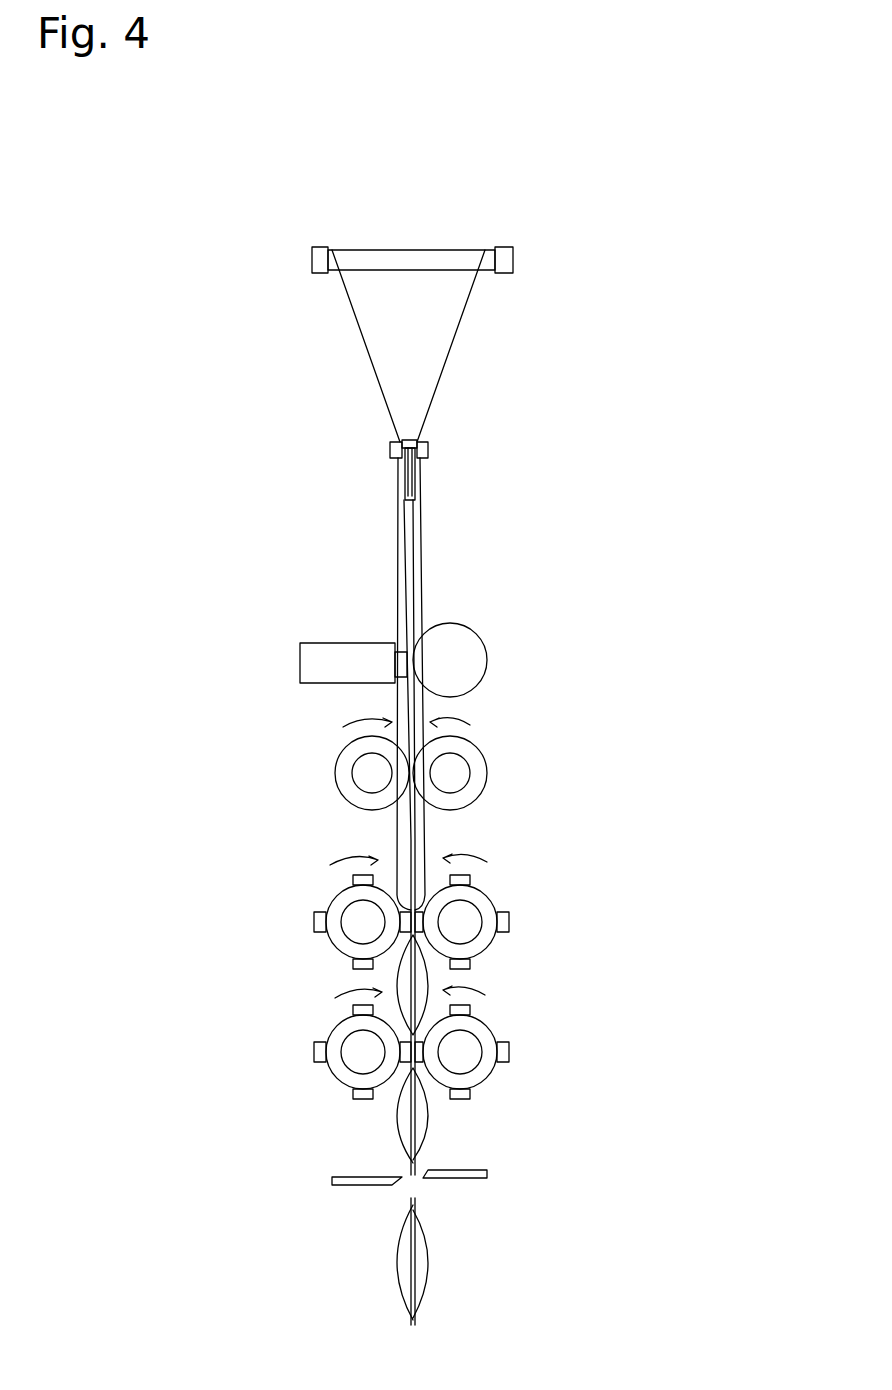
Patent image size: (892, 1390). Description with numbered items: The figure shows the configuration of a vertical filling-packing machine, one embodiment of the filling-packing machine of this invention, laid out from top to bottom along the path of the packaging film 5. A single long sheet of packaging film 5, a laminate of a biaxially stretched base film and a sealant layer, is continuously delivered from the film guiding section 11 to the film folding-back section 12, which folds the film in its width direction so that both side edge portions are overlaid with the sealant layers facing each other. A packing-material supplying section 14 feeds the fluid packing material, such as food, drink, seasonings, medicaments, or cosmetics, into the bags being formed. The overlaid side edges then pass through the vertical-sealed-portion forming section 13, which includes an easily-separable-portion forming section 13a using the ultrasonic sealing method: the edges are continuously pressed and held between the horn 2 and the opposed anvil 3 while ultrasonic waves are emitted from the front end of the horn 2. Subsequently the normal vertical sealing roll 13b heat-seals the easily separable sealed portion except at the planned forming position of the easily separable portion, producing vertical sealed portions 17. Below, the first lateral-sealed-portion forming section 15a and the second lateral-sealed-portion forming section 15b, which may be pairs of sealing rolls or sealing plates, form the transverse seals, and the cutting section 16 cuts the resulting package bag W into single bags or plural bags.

The film guiding section 11 is at (528, 252).
The packaging film 5 is at (450, 347).
The film folding-back section 12 is at (438, 440).
The packing-material supplying section 14 is at (417, 470).
The vertical sealed portion 17 is at (424, 827).
The vertical-sealed-portion forming section 13 is at (250, 550).
The easily-separable-portion forming section 13a is at (325, 612).
The horn 2 is at (395, 646).
The anvil 3 is at (467, 657).
The vertical sealing roll 13b is at (328, 765).
The first lateral-sealed-portion forming section 15a is at (497, 883).
The second lateral-sealed-portion forming section 15b is at (497, 1015).
The cutting section 16 is at (485, 1158).
The package bag W is at (437, 1247).